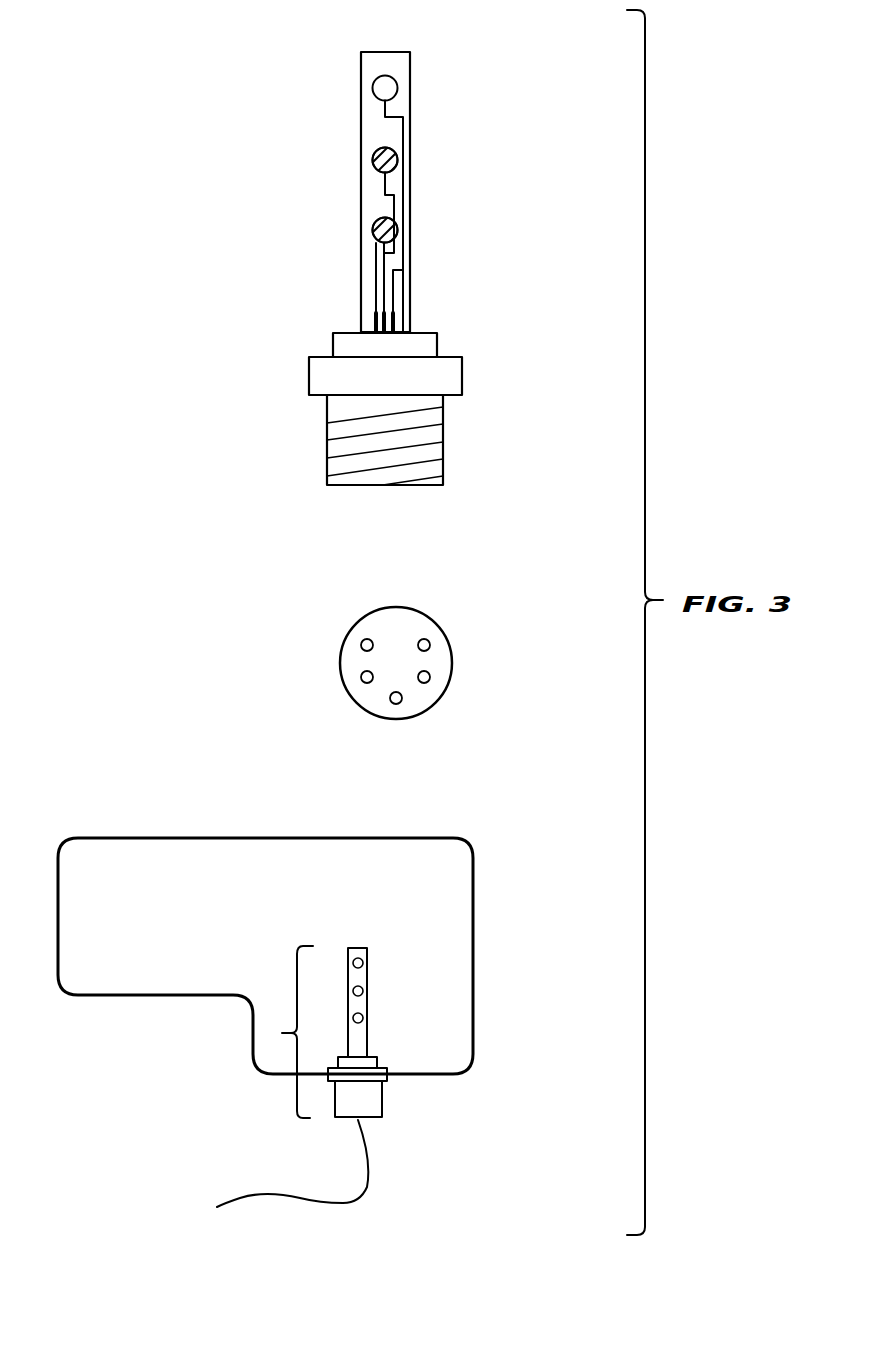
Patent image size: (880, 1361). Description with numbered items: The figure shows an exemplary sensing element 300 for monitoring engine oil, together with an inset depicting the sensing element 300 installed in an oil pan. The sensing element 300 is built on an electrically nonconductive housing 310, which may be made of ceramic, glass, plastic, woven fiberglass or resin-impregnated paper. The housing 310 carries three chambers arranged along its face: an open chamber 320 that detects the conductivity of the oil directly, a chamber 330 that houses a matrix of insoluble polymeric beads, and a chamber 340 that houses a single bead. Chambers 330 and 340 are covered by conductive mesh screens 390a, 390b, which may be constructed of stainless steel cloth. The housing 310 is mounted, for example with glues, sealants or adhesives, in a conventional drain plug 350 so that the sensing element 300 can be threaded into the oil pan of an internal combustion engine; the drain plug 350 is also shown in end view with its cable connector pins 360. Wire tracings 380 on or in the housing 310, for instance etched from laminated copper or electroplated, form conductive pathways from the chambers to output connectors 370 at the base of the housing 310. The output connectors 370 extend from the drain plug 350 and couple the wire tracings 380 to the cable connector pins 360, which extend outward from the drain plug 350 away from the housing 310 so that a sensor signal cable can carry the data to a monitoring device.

The sensing element 300 is at (523, 207).
The electrically nonconductive housing 310 is at (412, 70).
The chamber 320 is at (392, 88).
The chamber 330 is at (397, 160).
The chamber 340 is at (397, 230).
The drain plug 350 is at (432, 447).
The cable connector pins 360 is at (398, 702).
The output connectors 370 is at (393, 325).
The wire tracings 380 is at (375, 290).
The conductive mesh screen 390a is at (373, 160).
The conductive mesh screen 390b is at (373, 231).